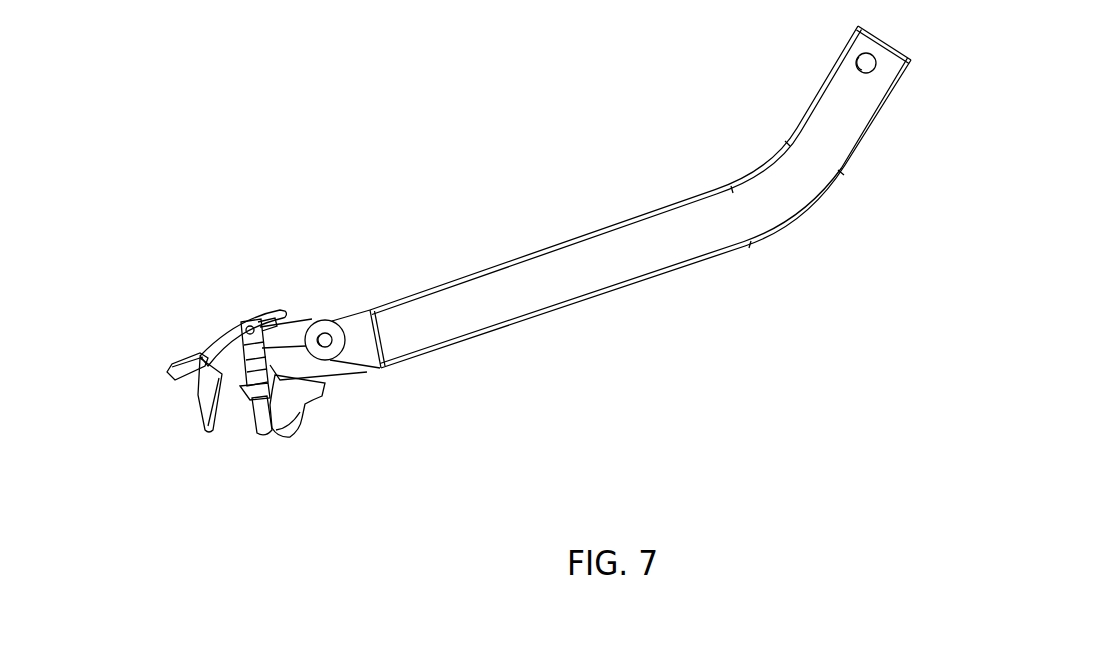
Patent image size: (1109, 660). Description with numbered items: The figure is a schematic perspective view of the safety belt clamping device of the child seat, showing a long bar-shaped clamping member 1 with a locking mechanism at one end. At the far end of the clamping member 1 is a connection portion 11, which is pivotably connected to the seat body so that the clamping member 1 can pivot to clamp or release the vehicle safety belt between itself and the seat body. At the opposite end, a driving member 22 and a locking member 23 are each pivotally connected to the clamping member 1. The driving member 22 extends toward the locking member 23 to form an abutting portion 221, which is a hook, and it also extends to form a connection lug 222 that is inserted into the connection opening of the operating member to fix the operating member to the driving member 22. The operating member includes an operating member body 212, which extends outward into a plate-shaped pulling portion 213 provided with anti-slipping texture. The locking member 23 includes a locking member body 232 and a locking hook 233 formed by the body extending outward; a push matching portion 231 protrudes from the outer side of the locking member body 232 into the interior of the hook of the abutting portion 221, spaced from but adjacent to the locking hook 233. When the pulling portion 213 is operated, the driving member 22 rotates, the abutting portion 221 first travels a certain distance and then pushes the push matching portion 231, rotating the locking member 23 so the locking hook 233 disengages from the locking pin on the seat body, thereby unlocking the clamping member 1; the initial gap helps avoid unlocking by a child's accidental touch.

The clamping member 1 is at (587, 232).
The connection portion 11 is at (877, 70).
The driving member 22 is at (385, 202).
The abutting portion 221 is at (243, 393).
The connection lug 222 is at (262, 320).
The operating member body 212 is at (241, 330).
The pulling portion 213 is at (182, 352).
The locking member 23 is at (103, 520).
The push matching portion 231 is at (243, 393).
The locking member body 232 is at (245, 427).
The locking hook 233 is at (290, 417).